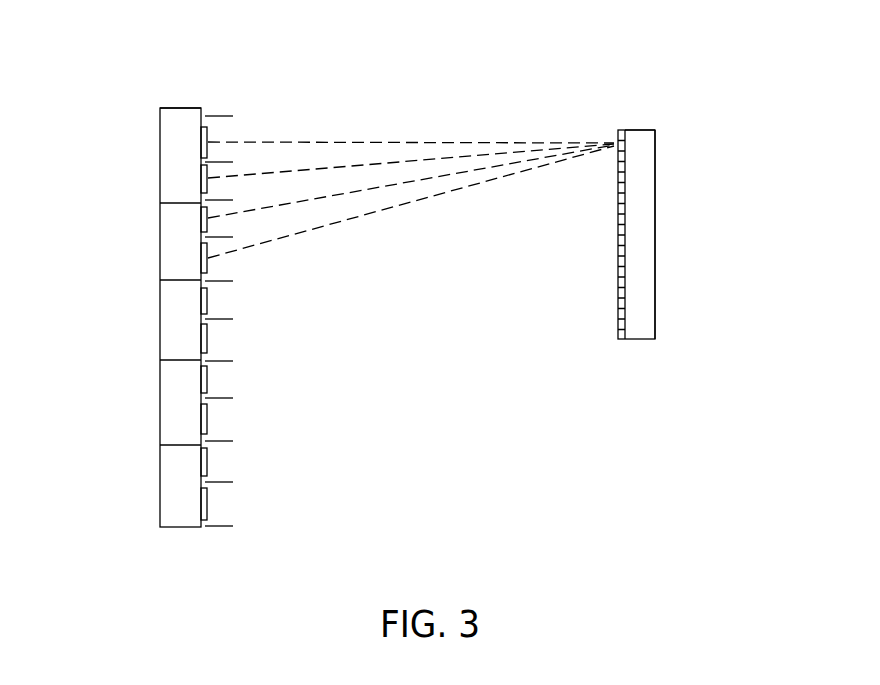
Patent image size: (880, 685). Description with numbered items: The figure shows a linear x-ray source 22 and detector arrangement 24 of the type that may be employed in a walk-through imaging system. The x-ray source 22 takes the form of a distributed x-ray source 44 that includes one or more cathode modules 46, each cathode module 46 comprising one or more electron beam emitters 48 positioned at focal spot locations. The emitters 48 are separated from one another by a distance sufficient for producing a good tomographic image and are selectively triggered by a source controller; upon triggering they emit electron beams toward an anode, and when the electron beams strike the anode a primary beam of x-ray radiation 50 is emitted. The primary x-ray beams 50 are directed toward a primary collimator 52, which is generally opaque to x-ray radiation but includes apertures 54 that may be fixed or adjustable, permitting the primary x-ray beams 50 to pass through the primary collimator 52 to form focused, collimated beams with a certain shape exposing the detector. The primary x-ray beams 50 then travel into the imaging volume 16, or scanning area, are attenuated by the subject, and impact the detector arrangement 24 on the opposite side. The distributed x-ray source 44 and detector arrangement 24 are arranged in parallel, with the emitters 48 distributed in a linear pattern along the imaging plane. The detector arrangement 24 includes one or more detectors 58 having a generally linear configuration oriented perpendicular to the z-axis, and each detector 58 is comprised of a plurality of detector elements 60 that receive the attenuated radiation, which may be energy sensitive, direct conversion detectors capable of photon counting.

The imaging volume 16 is at (441, 281).
The x-ray source 22 is at (187, 78).
The detector arrangement 24 is at (642, 73).
The distributed x-ray source 44 is at (128, 167).
The cathode module 46 is at (160, 403).
The electron beam emitter 48 is at (201, 110).
The primary x-ray beam 50 is at (365, 160).
The primary collimator 52 is at (218, 537).
The aperture 54 is at (222, 415).
The detector 58 is at (637, 339).
The detector element 60 is at (618, 312).